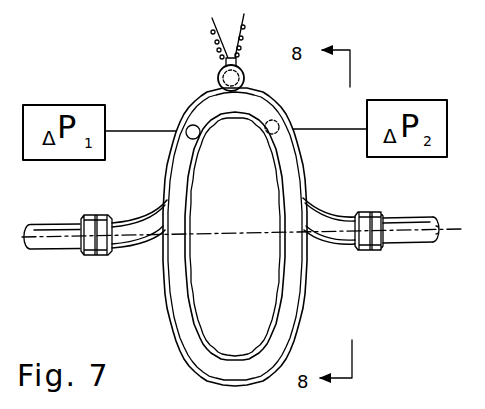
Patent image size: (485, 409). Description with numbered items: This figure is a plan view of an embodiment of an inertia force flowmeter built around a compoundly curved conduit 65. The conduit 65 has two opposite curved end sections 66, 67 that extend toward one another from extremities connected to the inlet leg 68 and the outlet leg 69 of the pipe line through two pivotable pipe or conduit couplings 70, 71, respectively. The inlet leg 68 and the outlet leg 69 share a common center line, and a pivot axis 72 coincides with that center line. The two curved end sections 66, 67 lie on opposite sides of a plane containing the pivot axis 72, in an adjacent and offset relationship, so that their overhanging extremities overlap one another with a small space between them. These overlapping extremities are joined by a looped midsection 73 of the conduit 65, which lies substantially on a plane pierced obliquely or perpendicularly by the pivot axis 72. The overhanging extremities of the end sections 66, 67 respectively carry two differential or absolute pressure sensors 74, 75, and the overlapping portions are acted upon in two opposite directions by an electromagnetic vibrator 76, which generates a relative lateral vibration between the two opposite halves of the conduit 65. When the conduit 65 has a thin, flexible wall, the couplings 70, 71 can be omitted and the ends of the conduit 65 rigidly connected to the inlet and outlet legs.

The compoundly curved conduit 65 is at (165, 267).
The curved end section 66 is at (157, 167).
The curved end section 67 is at (322, 214).
The inlet leg 68 is at (62, 250).
The outlet leg 69 is at (410, 243).
The pivotable pipe coupling 70 is at (97, 213).
The pivotable pipe coupling 71 is at (370, 208).
The pivot axis 72 is at (445, 232).
The looped midsection 73 is at (180, 339).
The pressure sensor 74 is at (164, 134).
The pressure sensor 75 is at (305, 131).
The electromagnetic vibrator 76 is at (214, 86).